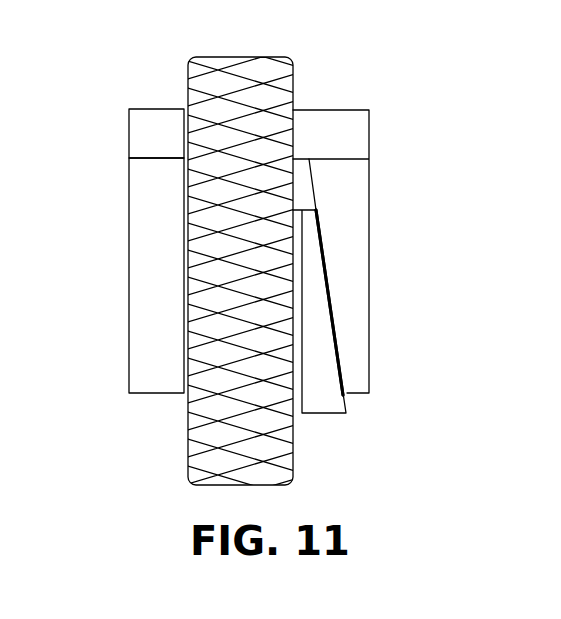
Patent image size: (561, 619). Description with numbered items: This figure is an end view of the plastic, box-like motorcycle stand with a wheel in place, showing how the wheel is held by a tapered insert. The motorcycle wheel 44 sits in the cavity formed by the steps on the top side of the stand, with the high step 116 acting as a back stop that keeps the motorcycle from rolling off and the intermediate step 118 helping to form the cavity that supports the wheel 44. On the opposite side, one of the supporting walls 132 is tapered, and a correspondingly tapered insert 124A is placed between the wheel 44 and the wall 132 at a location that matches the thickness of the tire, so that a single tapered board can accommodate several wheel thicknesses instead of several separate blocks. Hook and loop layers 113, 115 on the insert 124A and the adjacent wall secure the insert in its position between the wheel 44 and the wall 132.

The motorcycle wheel 44 is at (262, 93).
The high step 116 is at (150, 109).
The intermediate step 118 is at (150, 220).
The supporting wall 132 is at (357, 287).
The tapered insert 124A is at (318, 390).
The hook and loop layer 113 is at (325, 250).
The hook and loop layer 115 is at (329, 302).